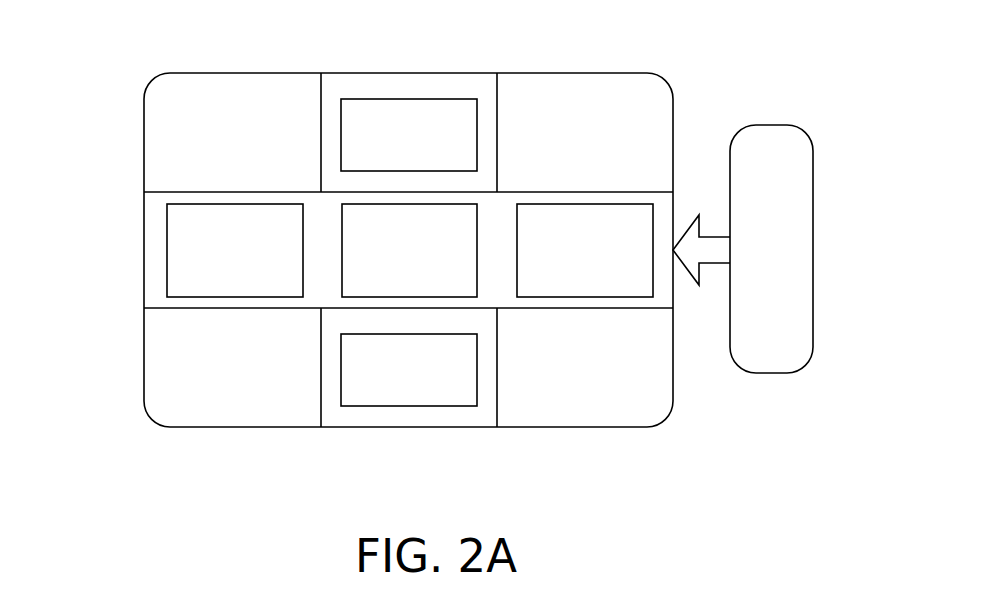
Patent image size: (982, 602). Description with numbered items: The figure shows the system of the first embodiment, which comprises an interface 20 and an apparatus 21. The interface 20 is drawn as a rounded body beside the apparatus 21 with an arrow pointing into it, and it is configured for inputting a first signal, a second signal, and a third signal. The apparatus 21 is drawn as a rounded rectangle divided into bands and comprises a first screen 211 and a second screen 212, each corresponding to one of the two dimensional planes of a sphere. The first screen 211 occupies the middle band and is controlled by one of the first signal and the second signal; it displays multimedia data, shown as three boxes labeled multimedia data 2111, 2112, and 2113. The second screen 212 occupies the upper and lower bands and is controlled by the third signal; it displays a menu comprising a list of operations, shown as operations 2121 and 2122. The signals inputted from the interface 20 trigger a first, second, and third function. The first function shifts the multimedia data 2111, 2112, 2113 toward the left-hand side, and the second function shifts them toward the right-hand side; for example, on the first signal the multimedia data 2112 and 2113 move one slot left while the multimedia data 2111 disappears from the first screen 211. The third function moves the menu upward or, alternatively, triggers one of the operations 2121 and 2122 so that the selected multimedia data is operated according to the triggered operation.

The interface 20 is at (776, 114).
The apparatus 21 is at (242, 62).
The first screen 211 is at (157, 268).
The second screen 212 is at (485, 85).
The multimedia data 2111 is at (235, 250).
The multimedia data 2112 is at (409, 250).
The multimedia data 2113 is at (585, 250).
The operation 2121 is at (409, 135).
The operation 2122 is at (409, 370).